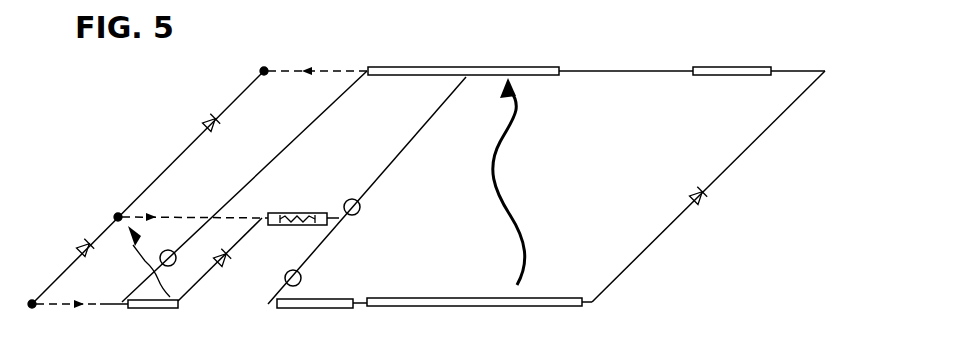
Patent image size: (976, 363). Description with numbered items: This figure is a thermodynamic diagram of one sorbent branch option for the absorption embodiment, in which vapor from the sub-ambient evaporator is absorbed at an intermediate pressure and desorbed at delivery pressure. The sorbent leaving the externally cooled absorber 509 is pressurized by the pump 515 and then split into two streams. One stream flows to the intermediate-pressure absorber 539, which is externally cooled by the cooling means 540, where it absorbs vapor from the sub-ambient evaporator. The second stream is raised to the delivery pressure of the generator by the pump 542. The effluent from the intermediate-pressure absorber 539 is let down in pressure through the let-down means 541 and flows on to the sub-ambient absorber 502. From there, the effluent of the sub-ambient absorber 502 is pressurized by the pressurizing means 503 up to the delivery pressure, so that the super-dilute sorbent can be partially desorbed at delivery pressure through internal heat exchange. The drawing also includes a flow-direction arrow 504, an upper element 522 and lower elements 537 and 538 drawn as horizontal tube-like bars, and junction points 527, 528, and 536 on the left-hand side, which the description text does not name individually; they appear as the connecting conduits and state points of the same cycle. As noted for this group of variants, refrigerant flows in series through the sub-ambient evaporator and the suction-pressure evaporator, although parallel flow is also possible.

The sub-ambient absorber 502 is at (143, 309).
The pressurizing means 503 is at (167, 250).
The flow direction arrow 504 is at (138, 261).
The externally cooled absorber 509 is at (297, 309).
The pump 515 is at (302, 279).
The heater tube 522 is at (711, 66).
The junction node 527 is at (262, 69).
The junction node 528 is at (114, 211).
The inlet node 536 is at (32, 299).
The heat exchanger tube 537 is at (533, 296).
The heat exchanger tube 538 is at (476, 66).
The 3P absorber 539 is at (297, 212).
The external cooling means 540 is at (277, 226).
The pressure let-down means 541 is at (231, 270).
The pump 542 is at (361, 206).